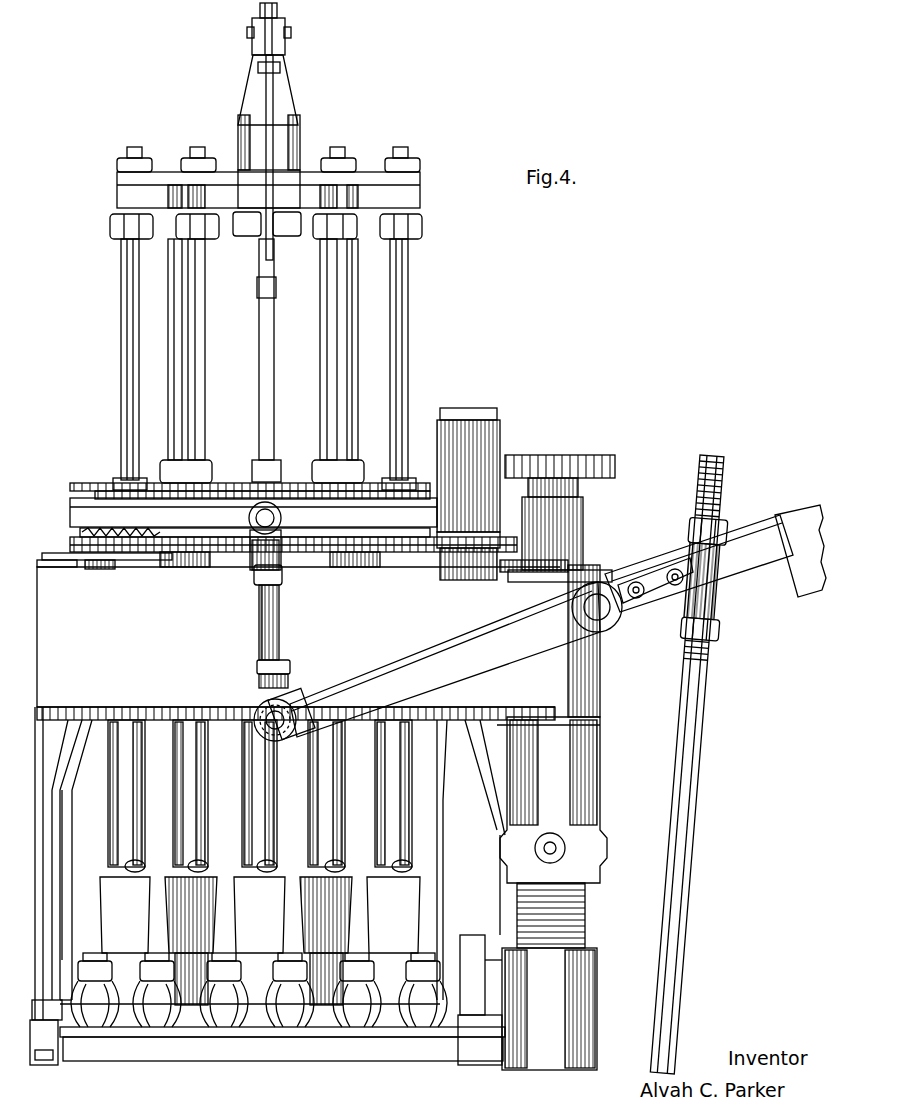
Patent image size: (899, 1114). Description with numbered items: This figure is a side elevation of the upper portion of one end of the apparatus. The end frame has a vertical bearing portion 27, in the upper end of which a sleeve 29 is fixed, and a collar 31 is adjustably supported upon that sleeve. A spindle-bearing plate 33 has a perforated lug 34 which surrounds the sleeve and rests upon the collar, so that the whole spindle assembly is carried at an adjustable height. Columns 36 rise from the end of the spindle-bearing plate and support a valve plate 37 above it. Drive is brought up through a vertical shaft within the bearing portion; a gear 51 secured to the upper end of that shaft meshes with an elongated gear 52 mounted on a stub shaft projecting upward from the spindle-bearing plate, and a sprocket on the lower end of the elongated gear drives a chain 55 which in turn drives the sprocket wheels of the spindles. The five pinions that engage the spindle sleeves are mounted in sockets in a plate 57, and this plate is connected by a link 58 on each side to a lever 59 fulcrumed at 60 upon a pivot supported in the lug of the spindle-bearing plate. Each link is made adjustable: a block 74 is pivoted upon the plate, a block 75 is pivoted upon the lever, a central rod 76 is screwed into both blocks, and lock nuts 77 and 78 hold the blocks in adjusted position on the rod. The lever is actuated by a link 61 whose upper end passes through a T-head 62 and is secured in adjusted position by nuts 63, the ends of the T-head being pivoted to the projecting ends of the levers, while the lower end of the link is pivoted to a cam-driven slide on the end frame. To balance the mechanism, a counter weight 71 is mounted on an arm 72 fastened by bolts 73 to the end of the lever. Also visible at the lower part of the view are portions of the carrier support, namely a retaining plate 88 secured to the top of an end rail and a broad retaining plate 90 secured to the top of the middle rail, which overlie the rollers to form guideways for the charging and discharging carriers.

The vertical bearing portion 27 is at (590, 992).
The sleeve 29 is at (585, 938).
The collar 31 is at (601, 790).
The spindle-bearing plate 33 is at (318, 642).
The perforated lug 34 is at (601, 680).
The columns 36 is at (176, 357).
The valve plate 37 is at (368, 183).
The gear 51 is at (603, 462).
The elongated gear 52 is at (497, 441).
The chain 55 is at (397, 543).
The plate 57 is at (75, 512).
The link 58 is at (279, 620).
The lever 59 is at (536, 648).
The fulcrum 60 is at (603, 607).
The link 61 is at (695, 784).
The T-head 62 is at (722, 605).
The nuts 63 is at (727, 530).
The counter weight 71 is at (800, 520).
The arm 72 is at (748, 557).
The bolts 73 is at (673, 571).
The block 74 is at (279, 530).
The block 75 is at (290, 699).
The central rod 76 is at (262, 612).
The lock nut 77 is at (281, 580).
The lock nut 78 is at (289, 668).
The retaining plate 88 is at (481, 1027).
The broad retaining plate 90 is at (46, 1018).